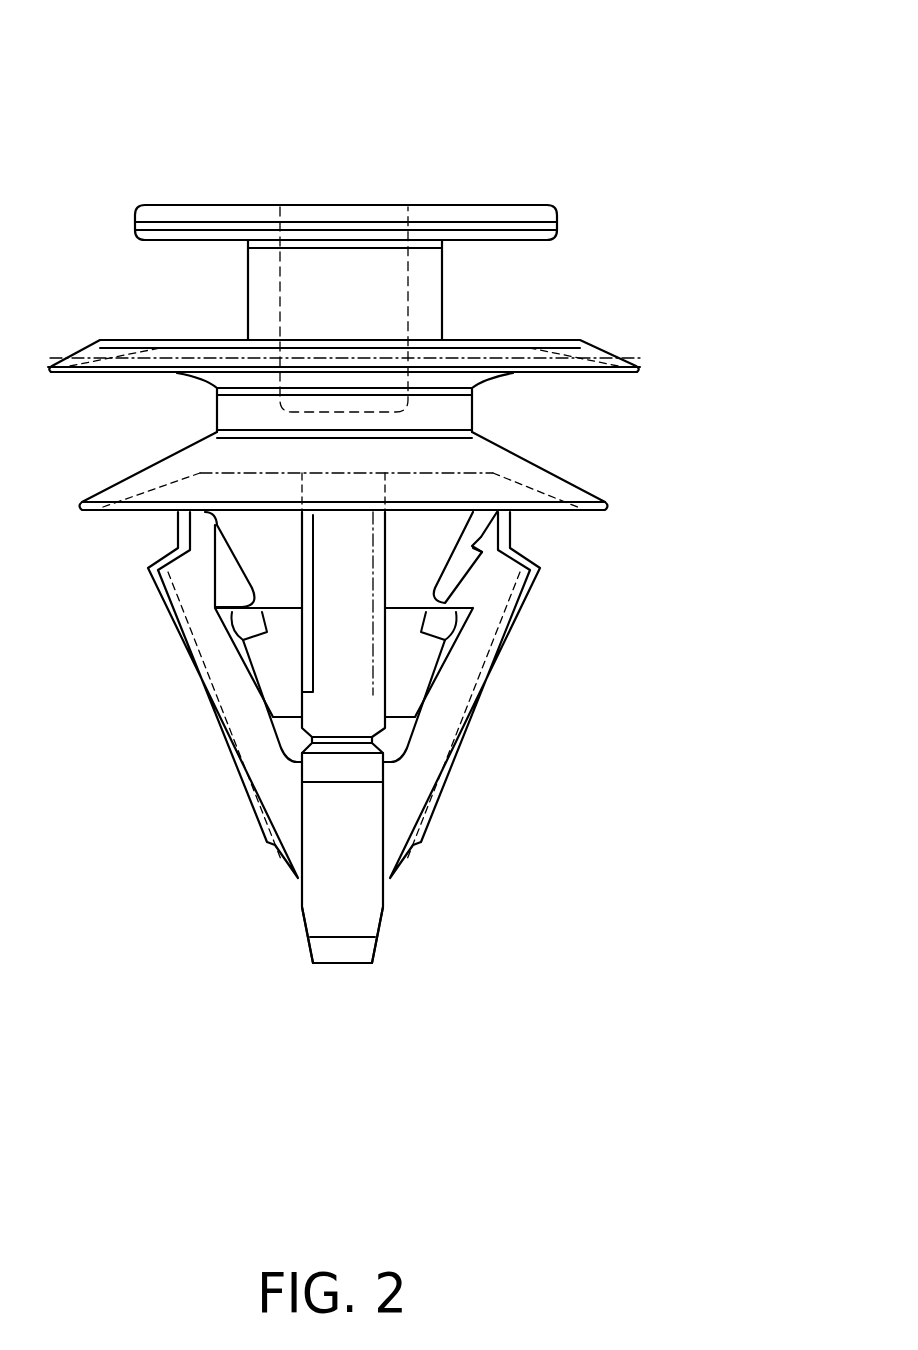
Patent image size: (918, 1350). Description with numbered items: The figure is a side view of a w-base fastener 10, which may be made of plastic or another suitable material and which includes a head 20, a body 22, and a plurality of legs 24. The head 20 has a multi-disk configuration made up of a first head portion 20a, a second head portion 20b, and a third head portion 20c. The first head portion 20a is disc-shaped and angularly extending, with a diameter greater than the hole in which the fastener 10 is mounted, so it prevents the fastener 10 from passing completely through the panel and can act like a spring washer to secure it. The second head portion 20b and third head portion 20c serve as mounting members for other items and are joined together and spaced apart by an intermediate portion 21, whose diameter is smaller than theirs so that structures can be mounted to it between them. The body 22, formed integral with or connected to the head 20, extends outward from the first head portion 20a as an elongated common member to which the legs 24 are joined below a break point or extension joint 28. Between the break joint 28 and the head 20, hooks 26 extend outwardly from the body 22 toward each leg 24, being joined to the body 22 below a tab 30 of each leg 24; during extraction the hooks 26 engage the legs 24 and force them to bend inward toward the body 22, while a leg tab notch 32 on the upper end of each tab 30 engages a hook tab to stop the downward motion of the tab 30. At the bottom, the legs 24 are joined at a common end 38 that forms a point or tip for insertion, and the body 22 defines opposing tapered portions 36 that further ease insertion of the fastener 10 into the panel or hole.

The w-base fastener 10 is at (200, 130).
The head 20 is at (455, 212).
The first head portion 20a is at (547, 482).
The second head portion 20b is at (613, 357).
The third head portion 20c is at (548, 208).
The intermediate portion 21 is at (425, 298).
The body 22 is at (352, 640).
The legs 24 is at (205, 662).
The hooks 26 is at (277, 667).
The break joint 28 is at (333, 742).
The tab 30 is at (225, 578).
The leg tab notch 32 is at (480, 547).
The tapered portions 36 is at (305, 930).
The common end 38 is at (342, 953).